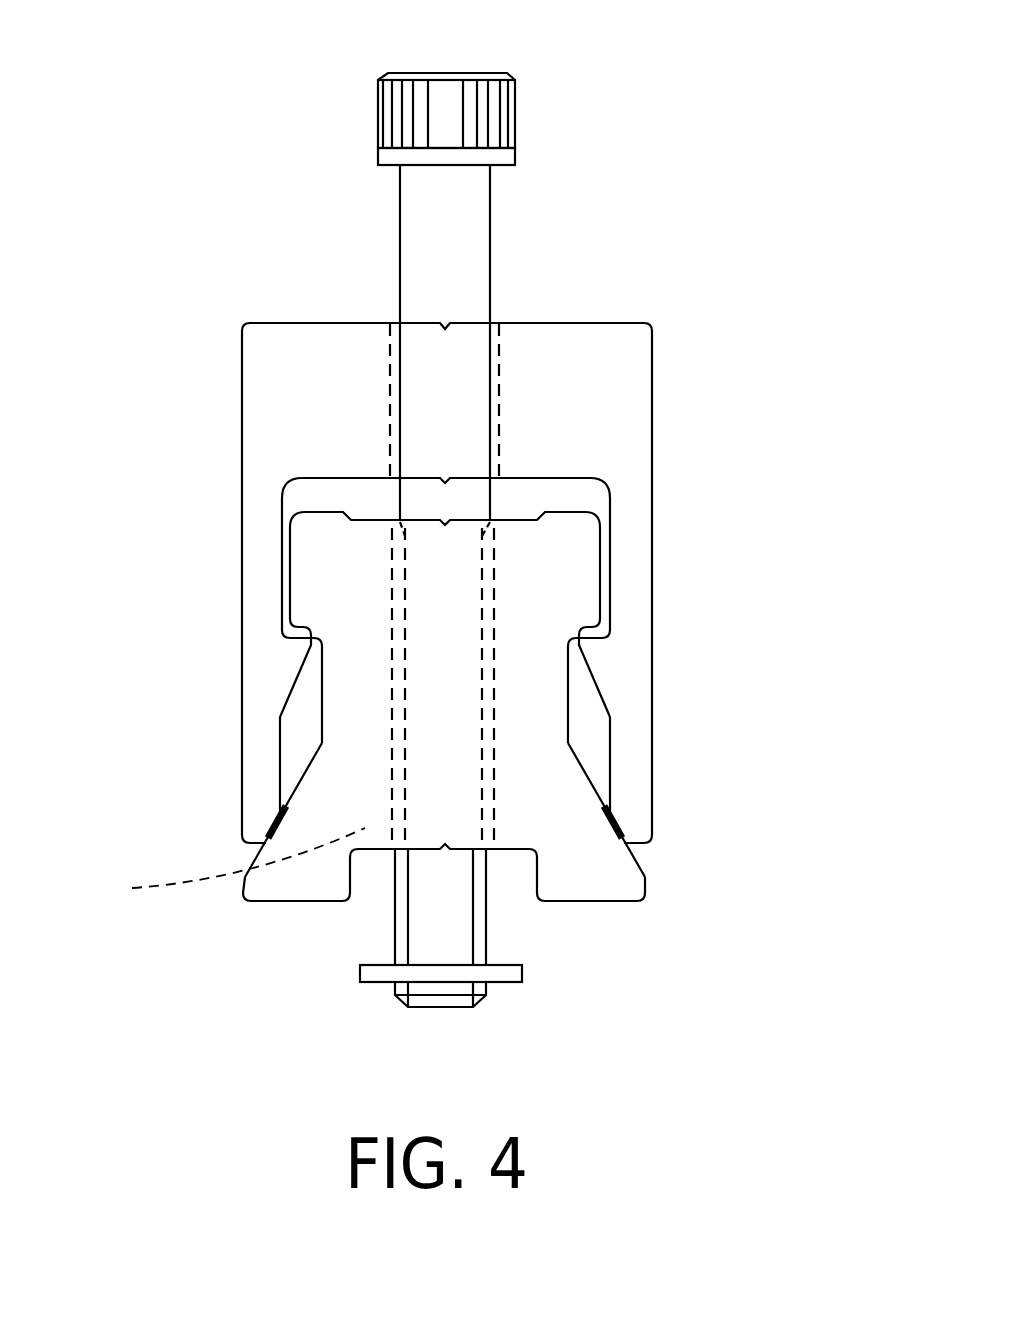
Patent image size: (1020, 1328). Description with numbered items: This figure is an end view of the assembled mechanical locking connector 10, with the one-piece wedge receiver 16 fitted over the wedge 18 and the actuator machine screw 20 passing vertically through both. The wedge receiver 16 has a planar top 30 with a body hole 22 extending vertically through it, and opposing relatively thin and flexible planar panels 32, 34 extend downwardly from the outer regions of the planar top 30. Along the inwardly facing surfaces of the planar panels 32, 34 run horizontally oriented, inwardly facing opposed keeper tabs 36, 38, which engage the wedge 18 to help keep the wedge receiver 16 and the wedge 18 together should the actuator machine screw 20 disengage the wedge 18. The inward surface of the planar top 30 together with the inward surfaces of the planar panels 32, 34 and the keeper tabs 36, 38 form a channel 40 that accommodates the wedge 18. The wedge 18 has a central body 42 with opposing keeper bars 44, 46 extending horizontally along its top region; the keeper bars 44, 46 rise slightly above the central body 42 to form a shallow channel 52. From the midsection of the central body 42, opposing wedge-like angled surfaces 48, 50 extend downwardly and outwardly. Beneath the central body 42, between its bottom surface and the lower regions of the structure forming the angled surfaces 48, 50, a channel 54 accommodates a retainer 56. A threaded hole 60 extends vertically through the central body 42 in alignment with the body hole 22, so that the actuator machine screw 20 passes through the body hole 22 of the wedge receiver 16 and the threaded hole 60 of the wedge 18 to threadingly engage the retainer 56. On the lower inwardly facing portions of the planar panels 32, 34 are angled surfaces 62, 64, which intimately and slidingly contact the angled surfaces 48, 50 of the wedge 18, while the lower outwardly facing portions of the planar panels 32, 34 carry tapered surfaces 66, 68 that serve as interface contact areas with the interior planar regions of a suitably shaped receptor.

The mechanical locking connector 10 is at (249, 121).
The wedge receiver 16 is at (656, 382).
The wedge 18 is at (567, 718).
The actuator machine screw 20 is at (491, 241).
The body hole 22 is at (502, 367).
The planar top 30 is at (320, 322).
The planar panel 32 is at (632, 603).
The planar panel 34 is at (265, 607).
The keeper tab 36 is at (590, 658).
The keeper tab 38 is at (305, 650).
The channel 40 is at (498, 502).
The central body 42 is at (462, 673).
The keeper bar 44 is at (570, 560).
The keeper bar 46 is at (305, 567).
The angled surface 48 is at (585, 785).
The angled surface 50 is at (293, 783).
The shallow channel 52 is at (362, 515).
The channel 54 is at (378, 873).
The retainer 56 is at (505, 973).
The threaded hole 60 is at (226, 868).
The angled surface 62 is at (614, 820).
The angled surface 64 is at (270, 818).
The tapered surface 66 is at (648, 810).
The tapered surface 68 is at (240, 810).